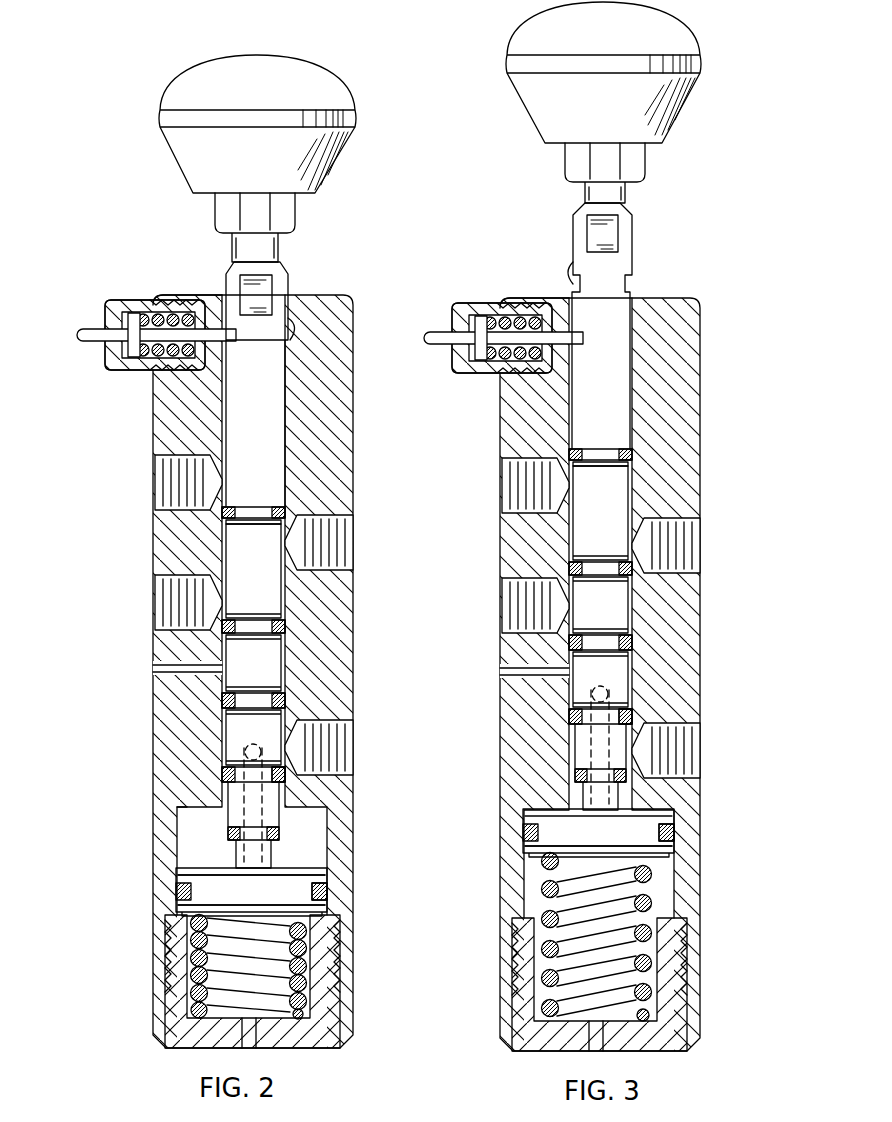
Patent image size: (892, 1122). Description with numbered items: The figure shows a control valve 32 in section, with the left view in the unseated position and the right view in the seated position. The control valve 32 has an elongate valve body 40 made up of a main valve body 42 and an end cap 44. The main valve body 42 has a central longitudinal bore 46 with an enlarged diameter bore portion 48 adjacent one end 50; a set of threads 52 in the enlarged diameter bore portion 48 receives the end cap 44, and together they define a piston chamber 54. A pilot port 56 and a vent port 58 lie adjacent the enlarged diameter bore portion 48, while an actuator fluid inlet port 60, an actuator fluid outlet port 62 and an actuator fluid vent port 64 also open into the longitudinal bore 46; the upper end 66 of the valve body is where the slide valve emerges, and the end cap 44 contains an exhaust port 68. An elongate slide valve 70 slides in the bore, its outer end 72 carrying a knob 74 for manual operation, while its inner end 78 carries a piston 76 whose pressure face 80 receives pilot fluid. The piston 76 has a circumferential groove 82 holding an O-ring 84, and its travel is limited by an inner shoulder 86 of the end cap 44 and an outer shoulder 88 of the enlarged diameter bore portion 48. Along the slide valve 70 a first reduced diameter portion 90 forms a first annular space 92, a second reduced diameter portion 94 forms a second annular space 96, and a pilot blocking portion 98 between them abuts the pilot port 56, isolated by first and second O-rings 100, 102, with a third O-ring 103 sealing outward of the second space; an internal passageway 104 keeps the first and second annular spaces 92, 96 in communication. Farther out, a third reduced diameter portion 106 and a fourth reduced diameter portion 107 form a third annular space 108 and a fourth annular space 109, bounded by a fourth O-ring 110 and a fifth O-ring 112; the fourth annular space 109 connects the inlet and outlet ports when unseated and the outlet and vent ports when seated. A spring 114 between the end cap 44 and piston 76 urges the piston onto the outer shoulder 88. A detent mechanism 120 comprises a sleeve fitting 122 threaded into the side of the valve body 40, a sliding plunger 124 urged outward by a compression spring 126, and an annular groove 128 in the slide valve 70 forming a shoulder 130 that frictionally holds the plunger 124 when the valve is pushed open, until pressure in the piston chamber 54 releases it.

In FIG. 2, the control valve 32 is at (333, 245).
In FIG. 3, the control valve 32 is at (668, 282).
In FIG. 2, the valve body 40 is at (152, 437).
In FIG. 3, the valve body 40 is at (702, 352).
In FIG. 2, the main valve body 42 is at (165, 525).
In FIG. 3, the main valve body 42 is at (680, 620).
In FIG. 2, the end cap 44 is at (175, 1035).
In FIG. 3, the end cap 44 is at (680, 1045).
In FIG. 2, the central longitudinal bore 46 is at (222, 563).
In FIG. 3, the central longitudinal bore 46 is at (574, 515).
In FIG. 2, the enlarged diameter bore portion 48 is at (178, 822).
In FIG. 3, the enlarged diameter bore portion 48 is at (665, 888).
In FIG. 2, the one end of the main valve body 50 is at (175, 1000).
In FIG. 3, the one end of the main valve body 50 is at (690, 1015).
In FIG. 2, the set of threads 52 is at (166, 952).
In FIG. 3, the set of threads 52 is at (690, 950).
In FIG. 2, the piston chamber 54 is at (190, 845).
In FIG. 3, the piston chamber 54 is at (662, 902).
In FIG. 2, the pilot port 56 is at (350, 748).
In FIG. 3, the pilot port 56 is at (694, 755).
In FIG. 2, the vent port 58 is at (165, 668).
In FIG. 3, the vent port 58 is at (512, 672).
In FIG. 2, the actuator fluid inlet port 60 is at (165, 614).
In FIG. 3, the actuator fluid inlet port 60 is at (515, 617).
In FIG. 2, the actuator fluid outlet port 62 is at (350, 548).
In FIG. 3, the actuator fluid outlet port 62 is at (694, 535).
In FIG. 2, the actuator fluid vent port 64 is at (156, 472).
In FIG. 3, the actuator fluid vent port 64 is at (505, 478).
In FIG. 2, the upper end of body 66 is at (200, 300).
In FIG. 3, the upper end of body 66 is at (546, 300).
In FIG. 2, the exhaust port 68 is at (252, 1049).
In FIG. 3, the exhaust port 68 is at (597, 1052).
In FIG. 2, the slide valve 70 is at (270, 412).
In FIG. 3, the slide valve 70 is at (636, 232).
In FIG. 2, the outer end 72 is at (228, 240).
In FIG. 3, the outer end 72 is at (622, 195).
In FIG. 2, the knob 74 is at (290, 80).
In FIG. 3, the knob 74 is at (668, 48).
In FIG. 2, the piston 76 is at (328, 884).
In FIG. 3, the piston 76 is at (675, 828).
In FIG. 2, the inner end 78 is at (300, 852).
In FIG. 3, the inner end 78 is at (662, 820).
In FIG. 2, the pressure face 80 is at (322, 868).
In FIG. 3, the pressure face 80 is at (530, 814).
In FIG. 2, the circumferential groove 82 is at (300, 905).
In FIG. 3, the circumferential groove 82 is at (555, 830).
In FIG. 2, the O-ring 84 is at (322, 893).
In FIG. 3, the O-ring 84 is at (672, 838).
In FIG. 3, the inner shoulder 86 is at (530, 905).
In FIG. 2, the outer shoulder 88 is at (180, 808).
In FIG. 2, the first reduced diameter portion 90 is at (183, 868).
In FIG. 3, the first annular space 92 is at (632, 795).
In FIG. 2, the second reduced diameter portion 94 is at (284, 690).
In FIG. 3, the second reduced diameter portion 94 is at (605, 695).
In FIG. 2, the second annular space 96 is at (222, 738).
In FIG. 3, the second annular space 96 is at (632, 665).
In FIG. 2, the pilot blocking portion 98 is at (285, 772).
In FIG. 2, the first O-ring 100 is at (285, 825).
In FIG. 3, the first O-ring 100 is at (574, 765).
In FIG. 2, the second O-ring 102 is at (222, 772).
In FIG. 3, the second O-ring 102 is at (632, 718).
In FIG. 2, the third O-ring 103 is at (282, 670).
In FIG. 3, the third O-ring 103 is at (632, 640).
In FIG. 2, the internal passageway 104 is at (246, 745).
In FIG. 3, the internal passageway 104 is at (632, 693).
In FIG. 2, the third reduced diameter portion 106 is at (282, 626).
In FIG. 3, the third reduced diameter portion 106 is at (632, 578).
In FIG. 2, the fourth reduced diameter portion 107 is at (282, 600).
In FIG. 3, the fourth reduced diameter portion 107 is at (632, 470).
In FIG. 2, the third annular space 108 is at (282, 642).
In FIG. 3, the third annular space 108 is at (632, 590).
In FIG. 2, the fourth annular space 109 is at (282, 576).
In FIG. 3, the fourth annular space 109 is at (632, 500).
In FIG. 2, the fourth O-ring 110 is at (222, 630).
In FIG. 3, the fourth O-ring 110 is at (574, 567).
In FIG. 2, the fifth O-ring 112 is at (282, 513).
In FIG. 3, the fifth O-ring 112 is at (632, 457).
In FIG. 2, the spring 114 is at (300, 987).
In FIG. 3, the spring 114 is at (645, 982).
In FIG. 2, the detent mechanism 120 is at (140, 310).
In FIG. 3, the detent mechanism 120 is at (489, 321).
In FIG. 2, the sleeve fitting 122 is at (122, 303).
In FIG. 3, the sleeve fitting 122 is at (470, 305).
In FIG. 2, the plunger 124 is at (84, 340).
In FIG. 3, the plunger 124 is at (432, 346).
In FIG. 2, the compression spring 126 is at (135, 356).
In FIG. 3, the compression spring 126 is at (482, 360).
In FIG. 2, the annular groove 128 is at (290, 320).
In FIG. 3, the annular groove 128 is at (633, 288).
In FIG. 2, the shoulder 130 is at (300, 322).
In FIG. 3, the shoulder 130 is at (572, 292).